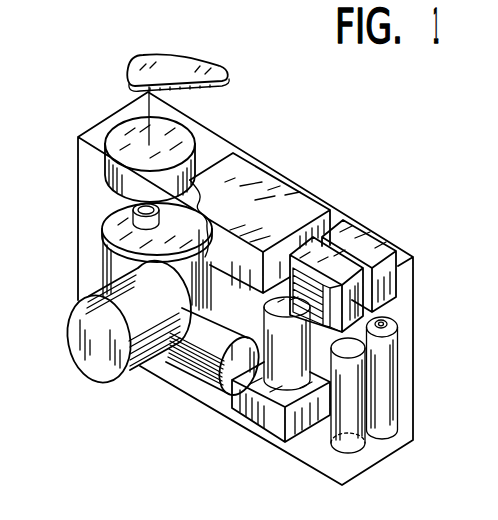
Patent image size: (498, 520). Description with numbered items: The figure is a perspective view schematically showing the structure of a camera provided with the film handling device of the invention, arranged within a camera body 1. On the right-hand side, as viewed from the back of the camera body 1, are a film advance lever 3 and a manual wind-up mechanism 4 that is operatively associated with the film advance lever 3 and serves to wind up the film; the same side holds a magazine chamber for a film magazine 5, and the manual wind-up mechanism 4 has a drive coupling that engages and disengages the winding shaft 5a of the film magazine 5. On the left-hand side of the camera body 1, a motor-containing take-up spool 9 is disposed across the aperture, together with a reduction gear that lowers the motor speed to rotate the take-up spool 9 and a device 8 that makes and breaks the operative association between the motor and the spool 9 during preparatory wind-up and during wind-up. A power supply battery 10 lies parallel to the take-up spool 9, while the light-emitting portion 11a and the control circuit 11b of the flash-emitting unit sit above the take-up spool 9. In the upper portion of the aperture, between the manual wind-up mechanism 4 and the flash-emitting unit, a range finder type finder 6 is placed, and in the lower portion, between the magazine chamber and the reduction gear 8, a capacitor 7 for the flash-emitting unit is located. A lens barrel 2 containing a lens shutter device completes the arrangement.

The camera body 1 is at (78, 188).
The lens barrel 2 is at (97, 360).
The film advance lever 3 is at (228, 73).
The manual wind-up mechanism 4 is at (185, 133).
The film magazine 5 is at (103, 262).
The winding shaft 5a is at (133, 210).
The range finder type finder 6 is at (293, 202).
The capacitor 7 is at (197, 358).
The reduction gear device 8 is at (258, 415).
The take-up spool 9 is at (263, 326).
The power supply battery 10 is at (387, 407).
The light-emitting portion 11a is at (305, 256).
The control circuit 11b is at (370, 248).